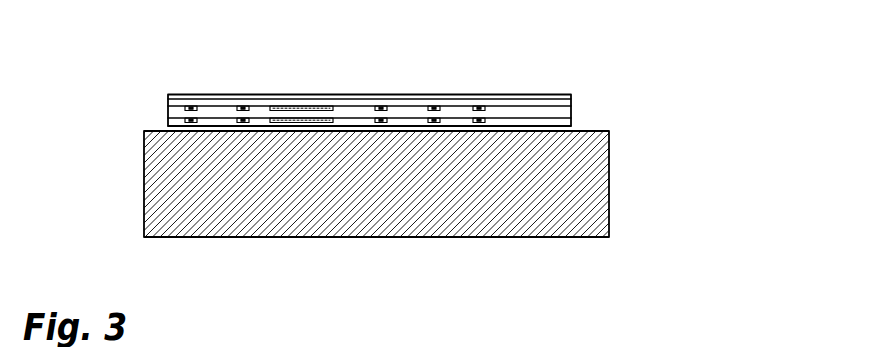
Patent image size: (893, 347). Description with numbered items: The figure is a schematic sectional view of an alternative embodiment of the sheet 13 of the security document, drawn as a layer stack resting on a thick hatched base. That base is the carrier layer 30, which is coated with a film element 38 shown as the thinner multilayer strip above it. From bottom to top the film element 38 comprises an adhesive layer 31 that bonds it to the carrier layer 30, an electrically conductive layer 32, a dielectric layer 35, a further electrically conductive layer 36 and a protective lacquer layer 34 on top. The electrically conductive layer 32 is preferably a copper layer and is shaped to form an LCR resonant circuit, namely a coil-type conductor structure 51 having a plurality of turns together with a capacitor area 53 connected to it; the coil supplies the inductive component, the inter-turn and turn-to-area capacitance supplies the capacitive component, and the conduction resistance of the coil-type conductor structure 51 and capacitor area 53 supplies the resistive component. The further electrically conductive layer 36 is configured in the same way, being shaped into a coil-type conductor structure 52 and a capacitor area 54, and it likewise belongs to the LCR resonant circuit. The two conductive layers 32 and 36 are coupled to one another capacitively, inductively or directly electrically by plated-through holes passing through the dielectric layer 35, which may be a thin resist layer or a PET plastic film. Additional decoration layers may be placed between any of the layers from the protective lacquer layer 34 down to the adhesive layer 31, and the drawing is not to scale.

The sheet 13 is at (726, 172).
The carrier layer 30 is at (150, 163).
The adhesive layer 31 is at (571, 123).
The electrically conductive layer 32 is at (571, 117).
The protective lacquer layer 34 is at (571, 97).
The dielectric layer 35 is at (571, 109).
The further electrically conductive layer 36 is at (571, 102).
The film element 38 is at (163, 95).
The coil-type conductor structure 51 is at (485, 119).
The coil-type conductor structure 52 is at (480, 106).
The capacitor area 53 is at (333, 119).
The capacitor area 54 is at (308, 106).